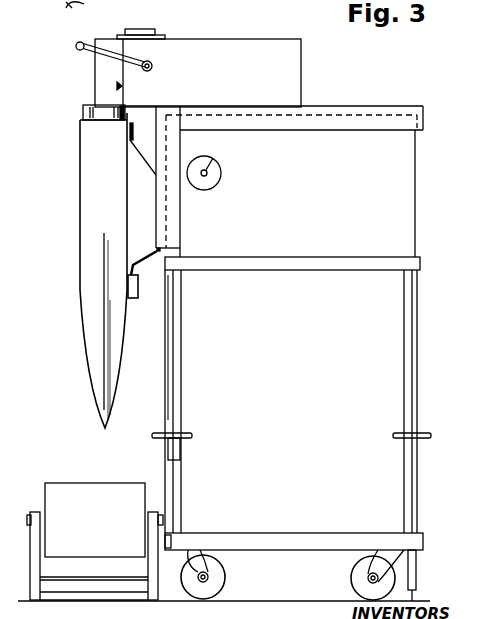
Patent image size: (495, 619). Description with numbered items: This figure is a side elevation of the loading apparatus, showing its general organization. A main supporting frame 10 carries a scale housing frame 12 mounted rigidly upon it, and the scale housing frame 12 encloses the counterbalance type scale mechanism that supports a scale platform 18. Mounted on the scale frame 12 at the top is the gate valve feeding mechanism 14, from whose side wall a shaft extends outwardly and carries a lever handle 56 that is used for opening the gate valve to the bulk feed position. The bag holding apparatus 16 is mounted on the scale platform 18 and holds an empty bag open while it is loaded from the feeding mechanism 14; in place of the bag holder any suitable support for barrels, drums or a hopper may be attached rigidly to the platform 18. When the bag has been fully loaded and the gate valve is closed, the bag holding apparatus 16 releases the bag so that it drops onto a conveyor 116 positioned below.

The main supporting frame 10 is at (412, 348).
The scale housing frame 12 is at (416, 202).
The gate valve feeding mechanism 14 is at (225, 31).
The bag holding apparatus 16 is at (75, 113).
The scale platform 18 is at (372, 106).
The lever handle 56 is at (76, 47).
The conveyor 116 is at (98, 492).